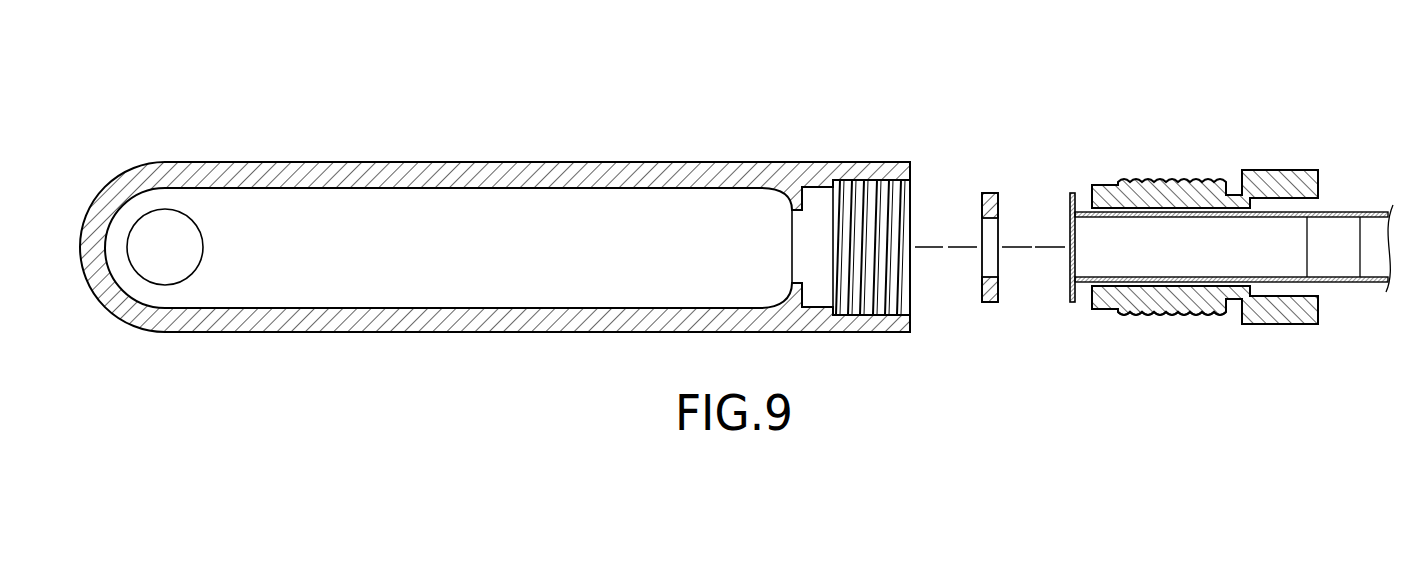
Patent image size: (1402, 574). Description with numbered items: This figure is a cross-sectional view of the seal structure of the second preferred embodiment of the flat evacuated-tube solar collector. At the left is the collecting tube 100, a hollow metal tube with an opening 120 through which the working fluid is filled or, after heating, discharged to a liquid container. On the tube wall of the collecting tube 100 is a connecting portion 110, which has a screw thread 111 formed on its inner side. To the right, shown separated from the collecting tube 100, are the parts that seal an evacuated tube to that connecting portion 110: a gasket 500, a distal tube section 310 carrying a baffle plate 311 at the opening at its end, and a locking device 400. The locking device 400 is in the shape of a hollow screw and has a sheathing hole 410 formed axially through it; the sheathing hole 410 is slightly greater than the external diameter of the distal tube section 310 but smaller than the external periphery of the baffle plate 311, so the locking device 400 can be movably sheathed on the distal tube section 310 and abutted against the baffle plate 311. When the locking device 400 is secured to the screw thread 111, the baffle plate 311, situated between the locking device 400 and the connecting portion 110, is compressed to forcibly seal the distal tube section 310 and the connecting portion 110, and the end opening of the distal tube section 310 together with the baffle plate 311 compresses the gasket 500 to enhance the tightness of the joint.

The collecting tube 100 is at (465, 168).
The connecting portion 110 is at (875, 162).
The screw thread 111 is at (890, 212).
The opening 120 is at (165, 247).
The distal tube section 310 is at (1177, 228).
The baffle plate 311 is at (1070, 194).
The locking device 400 is at (1140, 183).
The sheathing hole 410 is at (1145, 283).
The gasket 500 is at (987, 192).